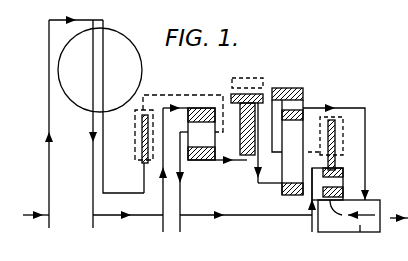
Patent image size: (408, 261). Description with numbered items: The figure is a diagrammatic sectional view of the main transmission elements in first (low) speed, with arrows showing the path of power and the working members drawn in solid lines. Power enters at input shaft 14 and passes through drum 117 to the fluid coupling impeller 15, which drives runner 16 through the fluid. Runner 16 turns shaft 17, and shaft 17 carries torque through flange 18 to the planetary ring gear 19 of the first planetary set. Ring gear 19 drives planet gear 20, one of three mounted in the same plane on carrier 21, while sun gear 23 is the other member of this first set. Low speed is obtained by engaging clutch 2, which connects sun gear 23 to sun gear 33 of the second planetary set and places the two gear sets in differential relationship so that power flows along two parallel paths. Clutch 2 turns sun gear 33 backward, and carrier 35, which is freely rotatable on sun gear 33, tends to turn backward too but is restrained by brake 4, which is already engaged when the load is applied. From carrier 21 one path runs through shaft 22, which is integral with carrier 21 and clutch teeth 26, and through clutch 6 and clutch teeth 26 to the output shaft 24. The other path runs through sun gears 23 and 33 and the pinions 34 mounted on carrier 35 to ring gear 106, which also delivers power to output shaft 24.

The drum 117 is at (46, 19).
The fluid coupling impeller 15 is at (134, 29).
The runner 16 is at (73, 104).
The input shaft 14 is at (33, 205).
The shaft 17 is at (130, 217).
The flange 18 is at (165, 196).
The shaft 22 is at (204, 216).
The carrier 21 is at (182, 108).
The planetary ring gear 19 is at (200, 108).
The planet gear 20 is at (197, 134).
The sun gear 23 is at (200, 163).
The clutch 2 is at (231, 93).
The carrier 35 is at (257, 176).
The planet gears 34 is at (270, 185).
The brake 4 is at (295, 87).
The sun gear 33 is at (290, 197).
The ring gear 106 is at (306, 106).
The clutch teeth 26 is at (345, 168).
The clutch 6 is at (345, 182).
The output shaft 24 is at (333, 233).